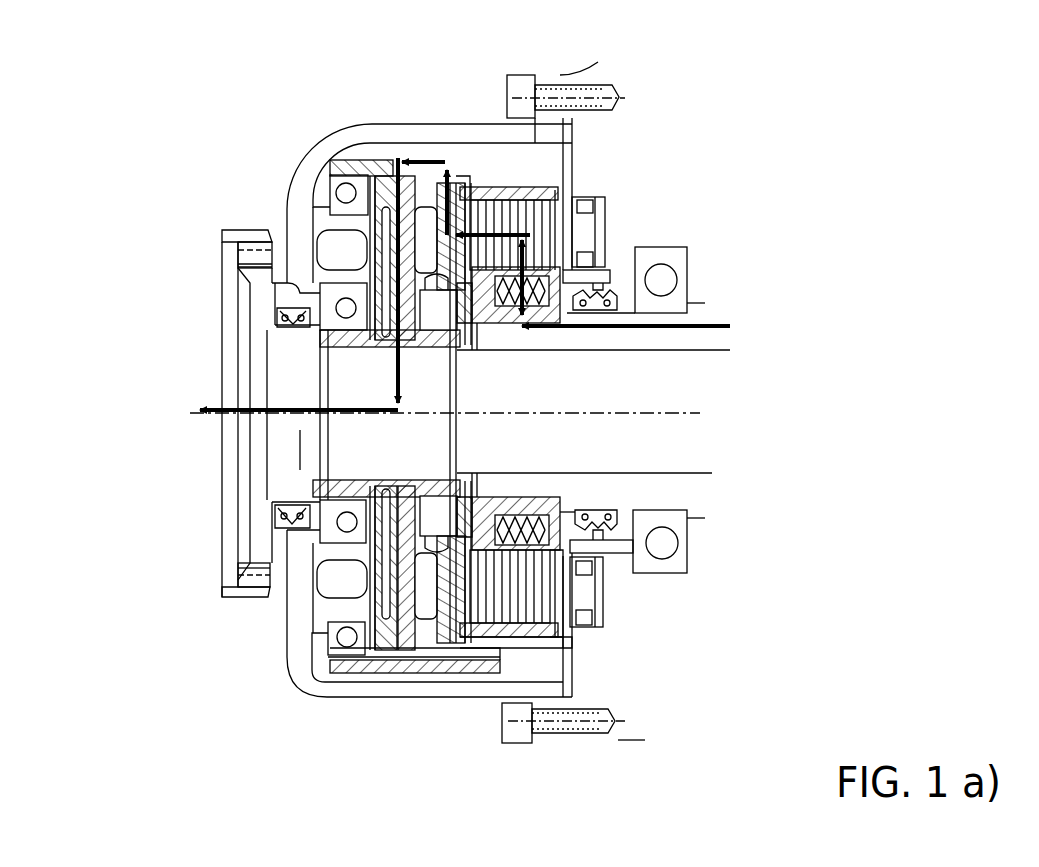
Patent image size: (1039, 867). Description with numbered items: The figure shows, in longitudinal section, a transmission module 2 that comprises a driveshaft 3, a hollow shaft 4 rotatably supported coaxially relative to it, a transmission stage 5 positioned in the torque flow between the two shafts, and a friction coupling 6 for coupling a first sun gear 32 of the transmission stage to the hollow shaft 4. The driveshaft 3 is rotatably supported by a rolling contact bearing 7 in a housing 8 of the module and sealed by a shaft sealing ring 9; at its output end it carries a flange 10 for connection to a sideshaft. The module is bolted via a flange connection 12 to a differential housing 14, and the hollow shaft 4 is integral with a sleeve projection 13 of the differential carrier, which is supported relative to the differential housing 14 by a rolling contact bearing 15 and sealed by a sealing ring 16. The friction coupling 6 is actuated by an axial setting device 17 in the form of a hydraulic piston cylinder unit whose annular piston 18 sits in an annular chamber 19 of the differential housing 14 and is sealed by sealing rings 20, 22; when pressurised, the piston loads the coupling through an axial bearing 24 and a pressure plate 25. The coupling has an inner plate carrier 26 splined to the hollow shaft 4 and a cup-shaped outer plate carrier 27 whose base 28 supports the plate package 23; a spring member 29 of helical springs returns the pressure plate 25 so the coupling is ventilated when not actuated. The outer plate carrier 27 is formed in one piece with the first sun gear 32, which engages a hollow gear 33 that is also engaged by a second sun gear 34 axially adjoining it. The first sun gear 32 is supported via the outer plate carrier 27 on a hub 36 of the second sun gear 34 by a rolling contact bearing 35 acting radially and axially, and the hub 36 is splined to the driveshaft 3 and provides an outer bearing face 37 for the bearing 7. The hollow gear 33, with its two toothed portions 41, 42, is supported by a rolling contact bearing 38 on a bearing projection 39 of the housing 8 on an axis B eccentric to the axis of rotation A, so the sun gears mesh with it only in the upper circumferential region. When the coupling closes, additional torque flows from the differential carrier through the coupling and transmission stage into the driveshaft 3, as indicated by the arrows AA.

The transmission module 2 is at (290, 95).
The driveshaft 3 is at (570, 396).
The hollow shaft 4 is at (583, 478).
The transmission stage 5 is at (385, 150).
The friction coupling 6 is at (530, 168).
The rolling contact bearing 7 is at (283, 283).
The housing 8 is at (290, 178).
The shaft sealing ring 9 is at (280, 518).
The flange 10 is at (248, 597).
The flange connection 12 is at (543, 743).
The sleeve projection 13 is at (688, 478).
The differential housing 14 is at (627, 733).
The rolling contact bearing 15 is at (680, 268).
The sealing ring 16 is at (605, 300).
The axial setting device 17 is at (605, 185).
The annular piston 18 is at (590, 235).
The annular chamber 19 is at (605, 600).
The sealing ring 20 is at (600, 627).
The sealing ring 22 is at (605, 565).
The plate package 23 is at (520, 630).
The axial bearing 24 is at (572, 630).
The pressure plate 25 is at (540, 618).
The inner plate carrier 26 is at (494, 325).
The outer plate carrier 27 is at (545, 200).
The base 28 is at (440, 347).
The spring member 29 is at (505, 495).
The first sun gear 32 is at (480, 185).
The hollow gear 33 is at (462, 200).
The second sun gear 34 is at (396, 157).
The rolling contact bearing 35 is at (436, 485).
The hub 36 is at (363, 347).
The outer bearing face 37 is at (290, 320).
The rolling contact bearing 38 is at (333, 653).
The bearing projection 39 is at (343, 613).
The toothed portion 41 is at (458, 675).
The toothed portion 42 is at (392, 673).
The axis of rotation A is at (670, 412).
The arrows AA is at (598, 340).
The axis B is at (300, 440).